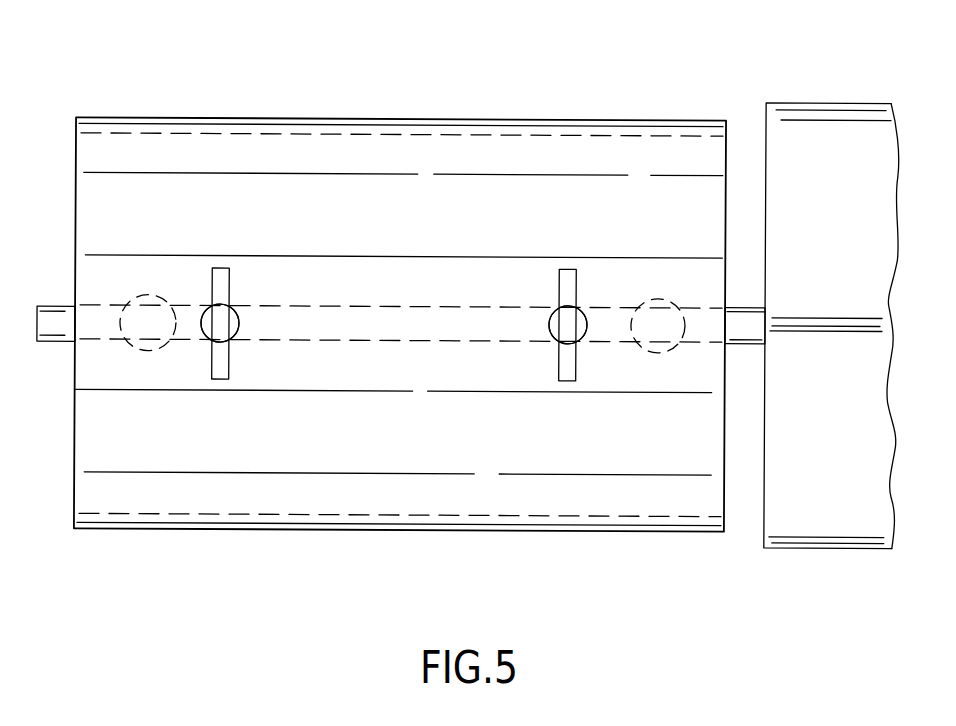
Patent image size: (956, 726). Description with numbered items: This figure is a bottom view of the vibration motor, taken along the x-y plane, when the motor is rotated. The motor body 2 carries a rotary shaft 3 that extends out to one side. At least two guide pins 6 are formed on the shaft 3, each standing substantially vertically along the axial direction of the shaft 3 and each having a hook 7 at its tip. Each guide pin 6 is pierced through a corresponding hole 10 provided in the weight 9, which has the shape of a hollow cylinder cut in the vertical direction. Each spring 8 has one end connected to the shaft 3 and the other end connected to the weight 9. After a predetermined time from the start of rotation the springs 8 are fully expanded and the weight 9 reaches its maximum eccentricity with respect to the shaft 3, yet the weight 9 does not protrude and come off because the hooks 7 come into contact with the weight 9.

The motor body 2 is at (838, 103).
The rotary shaft 3 is at (52, 344).
The guide pin 6 is at (235, 309).
The hook 7 is at (221, 381).
The spring 8 is at (137, 302).
The weight 9 is at (80, 530).
The hole 10 is at (205, 336).